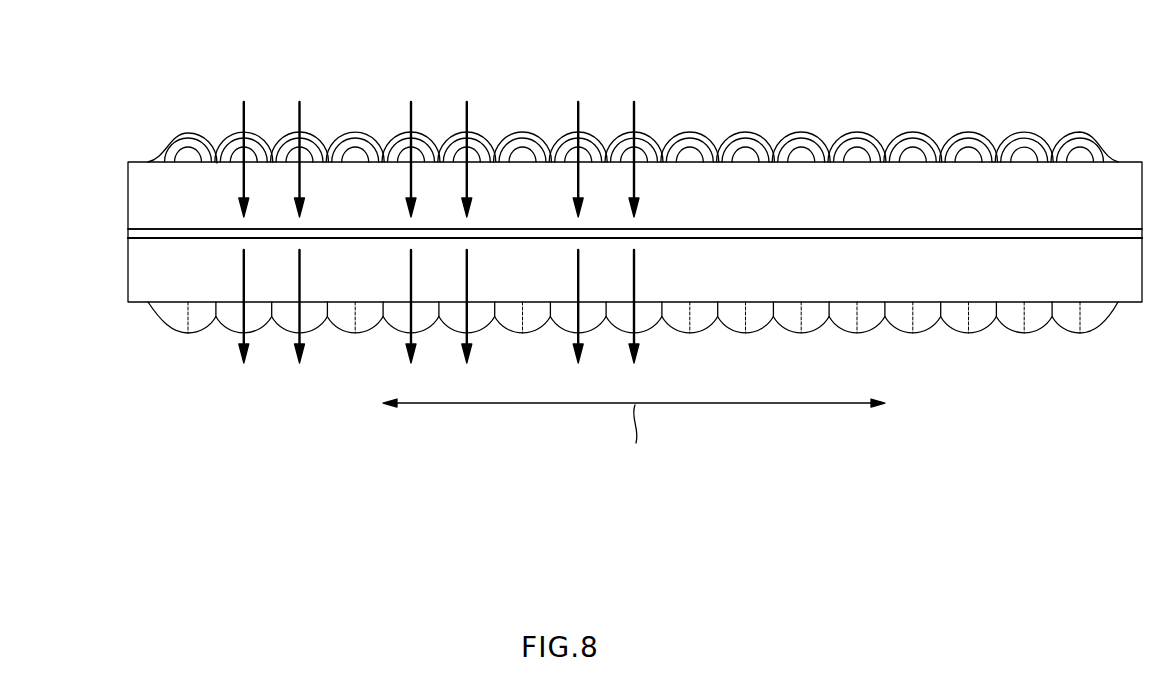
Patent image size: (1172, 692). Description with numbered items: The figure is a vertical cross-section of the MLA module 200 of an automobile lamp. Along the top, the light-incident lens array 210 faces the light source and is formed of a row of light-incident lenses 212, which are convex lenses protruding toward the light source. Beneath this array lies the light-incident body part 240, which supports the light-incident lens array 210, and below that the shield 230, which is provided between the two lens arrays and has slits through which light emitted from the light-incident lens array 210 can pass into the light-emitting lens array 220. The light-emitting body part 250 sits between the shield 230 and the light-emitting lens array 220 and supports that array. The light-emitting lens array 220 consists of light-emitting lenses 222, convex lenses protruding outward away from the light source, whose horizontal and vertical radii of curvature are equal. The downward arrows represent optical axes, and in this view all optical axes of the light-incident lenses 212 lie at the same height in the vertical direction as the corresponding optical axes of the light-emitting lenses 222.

The MLA module 200 is at (82, 48).
The light-incident lens array 210 is at (584, 117).
The light-incident lens 212 is at (803, 155).
The light-incident body part 240 is at (138, 196).
The shield 230 is at (138, 233).
The light-emitting body part 250 is at (138, 273).
The light-emitting lens array 220 is at (588, 349).
The light-emitting lens 222 is at (925, 315).